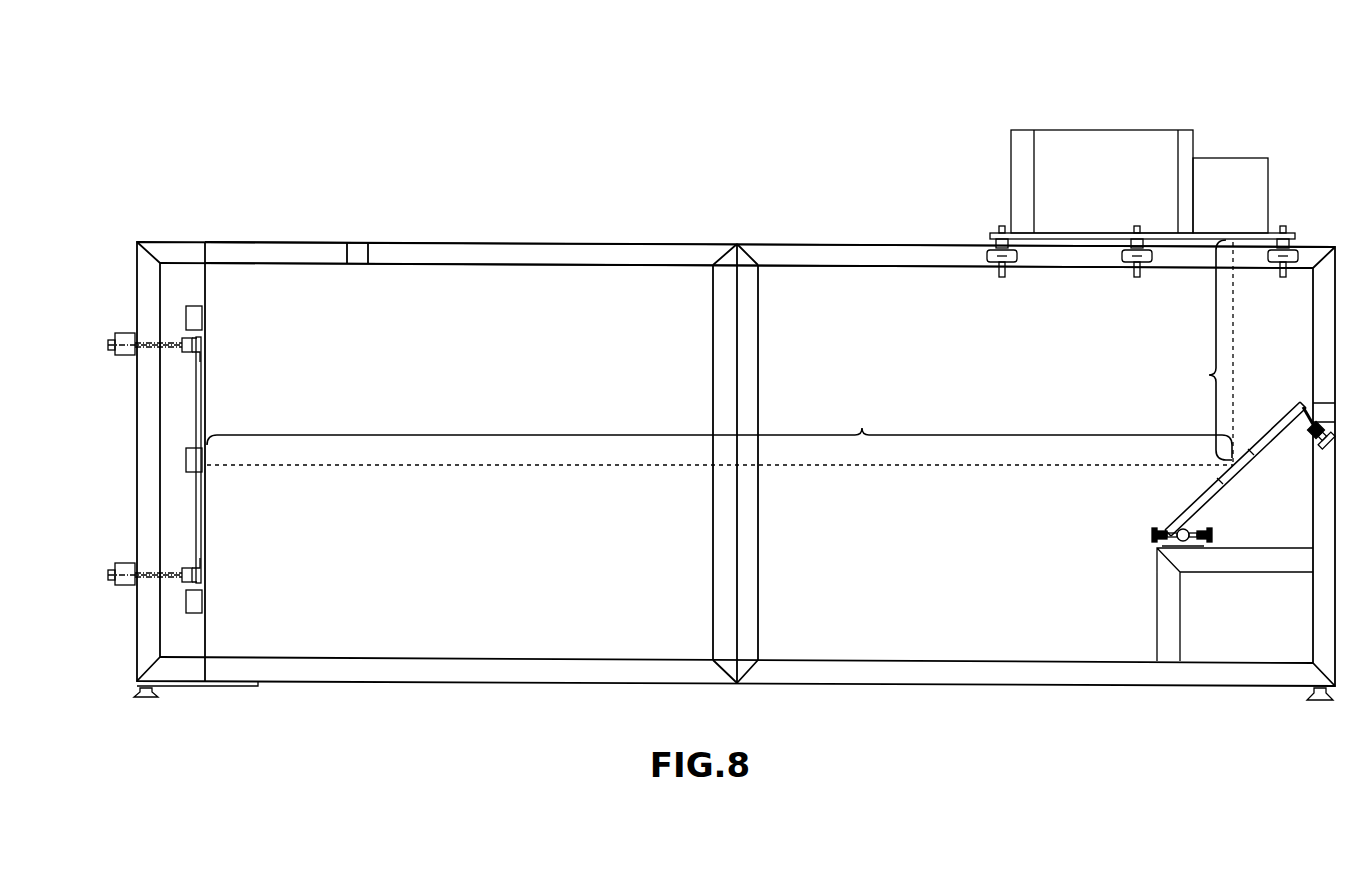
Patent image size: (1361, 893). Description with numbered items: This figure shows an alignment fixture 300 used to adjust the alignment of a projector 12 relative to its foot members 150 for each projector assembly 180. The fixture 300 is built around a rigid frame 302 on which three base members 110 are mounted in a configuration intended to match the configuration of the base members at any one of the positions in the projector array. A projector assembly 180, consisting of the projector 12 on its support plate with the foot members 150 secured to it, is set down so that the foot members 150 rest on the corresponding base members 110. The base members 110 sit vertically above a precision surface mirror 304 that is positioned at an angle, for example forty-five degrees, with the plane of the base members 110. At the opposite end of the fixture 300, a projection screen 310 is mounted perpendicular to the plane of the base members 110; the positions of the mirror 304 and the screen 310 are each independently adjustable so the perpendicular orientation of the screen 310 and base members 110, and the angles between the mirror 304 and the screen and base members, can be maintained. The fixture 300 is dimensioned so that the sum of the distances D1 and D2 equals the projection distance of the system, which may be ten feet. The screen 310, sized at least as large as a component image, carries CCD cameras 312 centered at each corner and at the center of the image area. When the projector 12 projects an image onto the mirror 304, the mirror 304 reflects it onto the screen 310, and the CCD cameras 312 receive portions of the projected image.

The alignment fixture 300 is at (452, 118).
The rigid frame 302 is at (571, 253).
The CCD cameras 312 is at (195, 318).
The projection screen 310 is at (204, 513).
The projector assembly 180 is at (1023, 82).
The projector 12 is at (1099, 152).
The foot members 150 is at (1000, 240).
The base members 110 is at (992, 262).
The precision surface mirror 304 is at (1190, 507).
The distance D1 is at (1202, 352).
The distance D2 is at (720, 433).